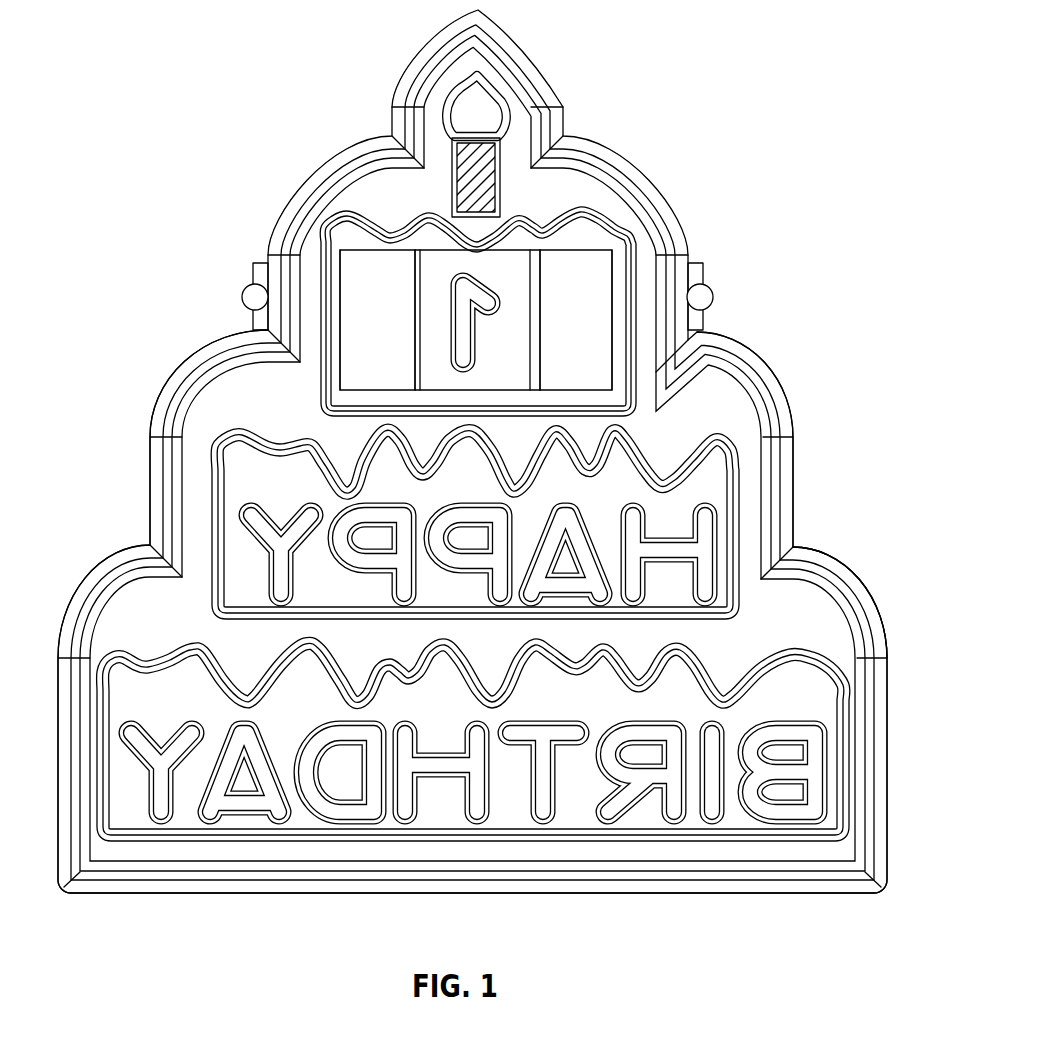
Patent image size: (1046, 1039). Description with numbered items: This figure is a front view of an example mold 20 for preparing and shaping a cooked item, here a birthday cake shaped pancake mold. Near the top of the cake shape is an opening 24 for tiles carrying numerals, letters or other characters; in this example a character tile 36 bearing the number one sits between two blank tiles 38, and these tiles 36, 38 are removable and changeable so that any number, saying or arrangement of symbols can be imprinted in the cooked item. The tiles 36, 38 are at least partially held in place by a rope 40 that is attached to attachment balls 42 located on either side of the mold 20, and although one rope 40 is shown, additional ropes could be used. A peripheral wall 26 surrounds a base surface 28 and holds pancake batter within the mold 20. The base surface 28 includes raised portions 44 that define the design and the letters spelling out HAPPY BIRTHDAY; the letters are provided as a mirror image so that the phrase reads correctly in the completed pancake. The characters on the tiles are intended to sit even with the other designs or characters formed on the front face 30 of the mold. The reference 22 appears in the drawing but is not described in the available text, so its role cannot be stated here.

The mold 20 is at (808, 378).
The bottom tier section 22 is at (822, 625).
The opening 24 is at (612, 263).
The peripheral wall 26 is at (795, 501).
The base surface 28 is at (765, 637).
The front face 30 is at (830, 748).
The character tile 36 is at (507, 270).
The blank tile 38 is at (575, 277).
The rope 40 is at (703, 276).
The attachment ball 42 is at (713, 297).
The raised portions 44 is at (300, 820).